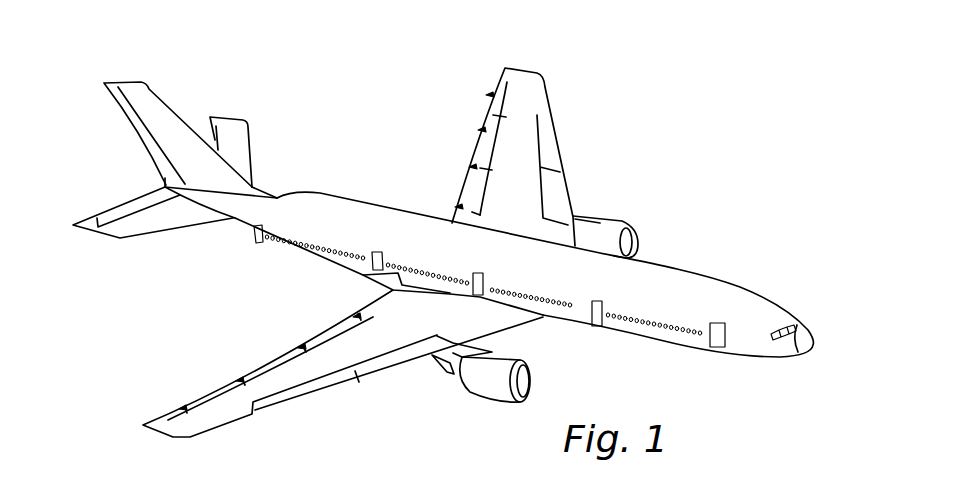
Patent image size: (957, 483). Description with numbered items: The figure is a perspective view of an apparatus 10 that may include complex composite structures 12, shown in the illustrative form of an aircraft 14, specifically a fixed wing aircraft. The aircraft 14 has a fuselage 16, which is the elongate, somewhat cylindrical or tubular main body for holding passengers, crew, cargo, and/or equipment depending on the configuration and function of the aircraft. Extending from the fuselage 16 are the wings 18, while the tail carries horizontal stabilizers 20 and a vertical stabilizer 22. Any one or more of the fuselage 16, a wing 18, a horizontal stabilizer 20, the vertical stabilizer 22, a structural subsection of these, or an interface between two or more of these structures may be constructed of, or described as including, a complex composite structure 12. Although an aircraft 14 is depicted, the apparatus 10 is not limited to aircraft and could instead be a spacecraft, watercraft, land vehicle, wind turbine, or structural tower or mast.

The apparatus 10 is at (767, 102).
The complex composite structures 12 is at (372, 104).
The aircraft 14 is at (712, 112).
The fuselage 16 is at (347, 202).
The wings 18 is at (558, 155).
The horizontal stabilizers 20 is at (252, 148).
The vertical stabilizer 22 is at (172, 104).